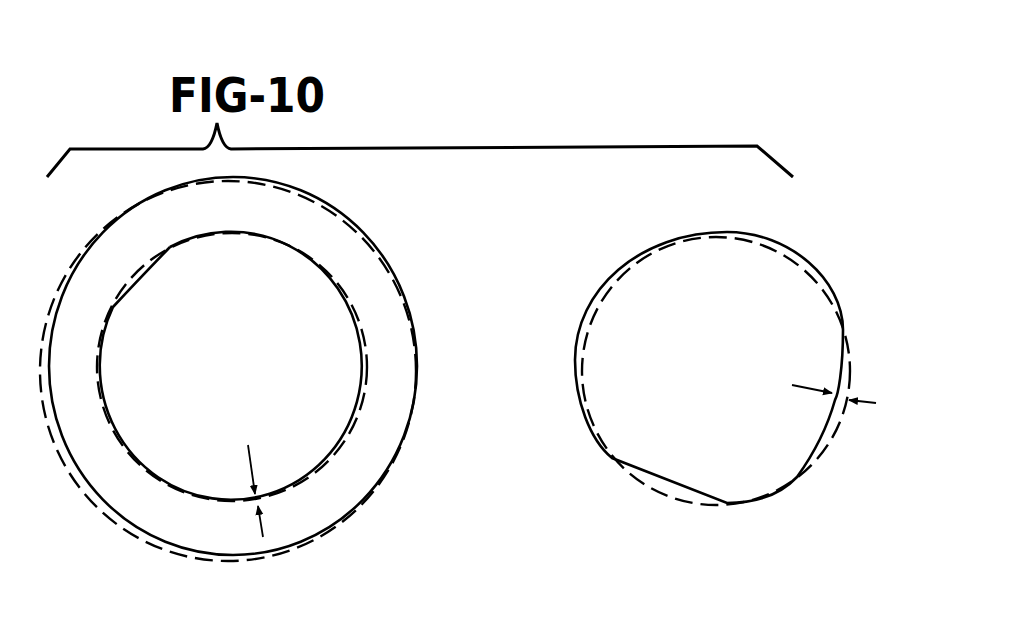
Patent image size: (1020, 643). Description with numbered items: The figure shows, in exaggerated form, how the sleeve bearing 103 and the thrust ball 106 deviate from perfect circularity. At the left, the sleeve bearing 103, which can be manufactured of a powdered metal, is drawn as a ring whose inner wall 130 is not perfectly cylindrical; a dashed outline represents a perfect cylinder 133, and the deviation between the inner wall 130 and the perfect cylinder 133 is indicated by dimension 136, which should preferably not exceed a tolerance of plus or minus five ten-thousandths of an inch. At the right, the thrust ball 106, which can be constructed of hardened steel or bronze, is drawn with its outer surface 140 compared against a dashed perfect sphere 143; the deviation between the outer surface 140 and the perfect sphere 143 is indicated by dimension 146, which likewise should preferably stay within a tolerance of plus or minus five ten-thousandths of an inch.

The sleeve bearing 103 is at (123, 225).
The thrust ball 106 is at (725, 368).
The inner wall 130 is at (230, 498).
The perfect cylinder 133 is at (283, 493).
The dimension 136 is at (253, 476).
The outer surface 140 is at (825, 420).
The perfect sphere 143 is at (836, 418).
The dimension 146 is at (806, 383).